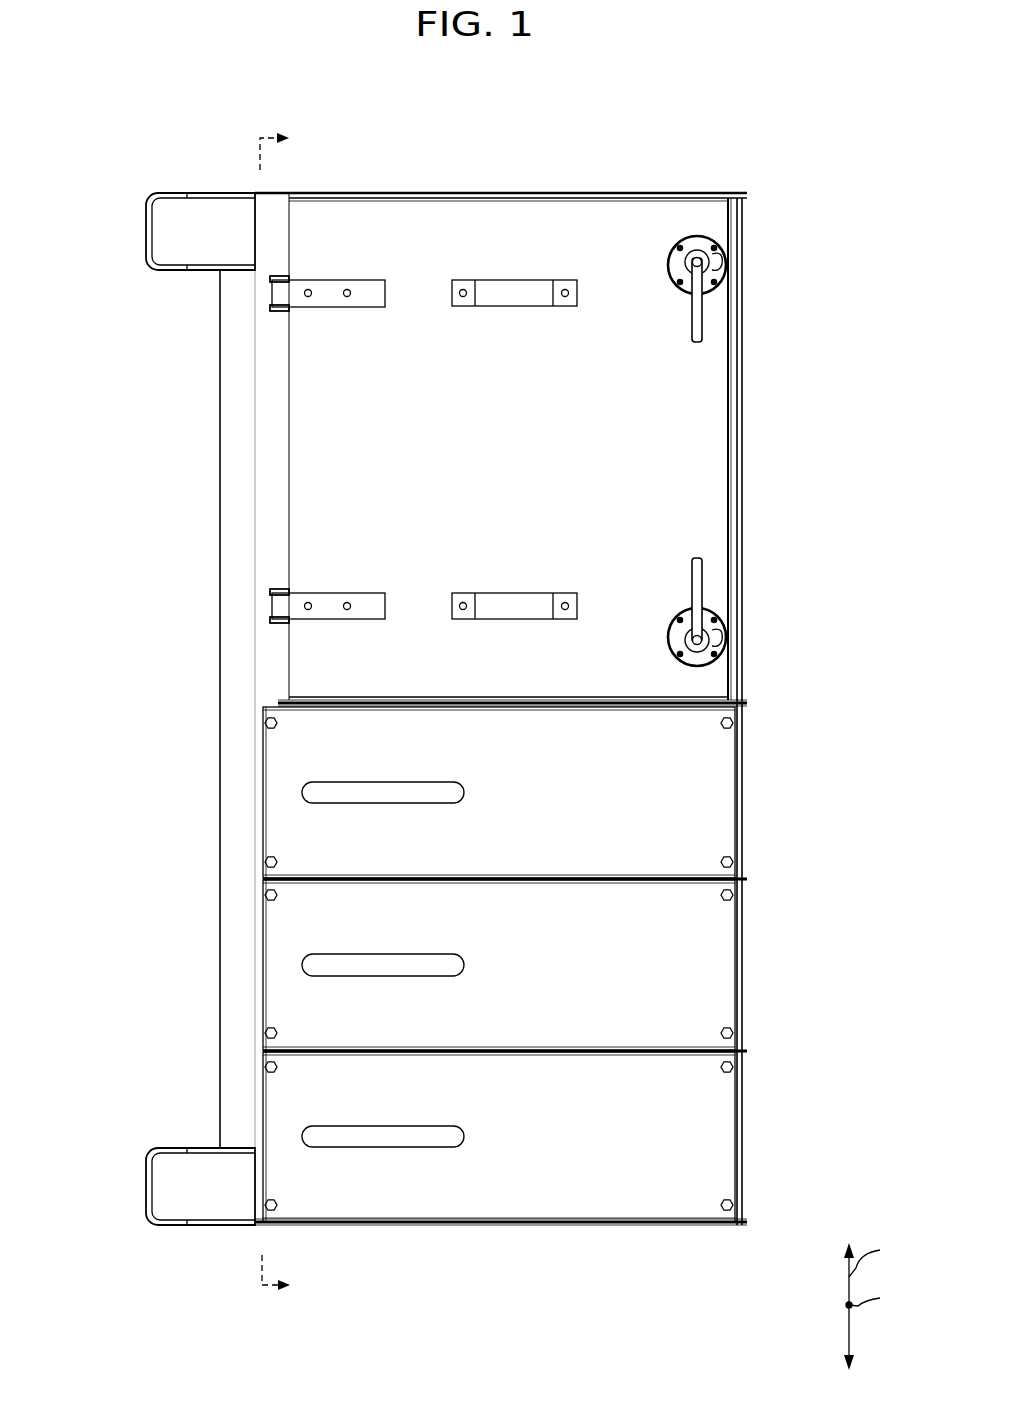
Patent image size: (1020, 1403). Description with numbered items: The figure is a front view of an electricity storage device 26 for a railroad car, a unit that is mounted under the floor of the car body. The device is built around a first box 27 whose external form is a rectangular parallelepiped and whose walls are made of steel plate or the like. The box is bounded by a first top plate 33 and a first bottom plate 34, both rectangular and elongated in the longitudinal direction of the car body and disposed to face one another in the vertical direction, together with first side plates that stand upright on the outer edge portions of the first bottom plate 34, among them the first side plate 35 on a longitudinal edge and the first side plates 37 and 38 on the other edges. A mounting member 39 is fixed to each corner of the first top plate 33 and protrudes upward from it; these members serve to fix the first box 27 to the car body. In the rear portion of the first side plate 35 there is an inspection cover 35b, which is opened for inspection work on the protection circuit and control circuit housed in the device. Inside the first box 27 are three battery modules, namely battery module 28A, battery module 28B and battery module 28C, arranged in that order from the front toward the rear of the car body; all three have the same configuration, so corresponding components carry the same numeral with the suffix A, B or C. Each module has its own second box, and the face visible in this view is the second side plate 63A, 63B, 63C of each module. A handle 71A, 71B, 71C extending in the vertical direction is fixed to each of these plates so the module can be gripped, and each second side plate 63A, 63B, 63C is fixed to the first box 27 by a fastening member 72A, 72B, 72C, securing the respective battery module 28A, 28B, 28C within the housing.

The electricity storage device 26 is at (118, 136).
The first box 27 is at (690, 182).
The battery module 28A is at (514, 1170).
The battery module 28B is at (484, 967).
The battery module 28C is at (484, 794).
The first top plate 33 is at (219, 418).
The first bottom plate 34 is at (743, 393).
The first side plate 35 is at (236, 468).
The inspection cover 35b is at (300, 523).
The first side plate 37 is at (422, 1225).
The first side plate 38 is at (407, 193).
The mounting member 39 is at (173, 197).
The second side plate 63A is at (715, 1151).
The second side plate 63B is at (715, 978).
The second side plate 63C is at (715, 808).
The handle 71A is at (418, 1130).
The handle 71B is at (418, 957).
The handle 71C is at (417, 787).
The fastening member 72A is at (733, 1205).
The fastening member 72B is at (733, 1033).
The fastening member 72C is at (733, 862).